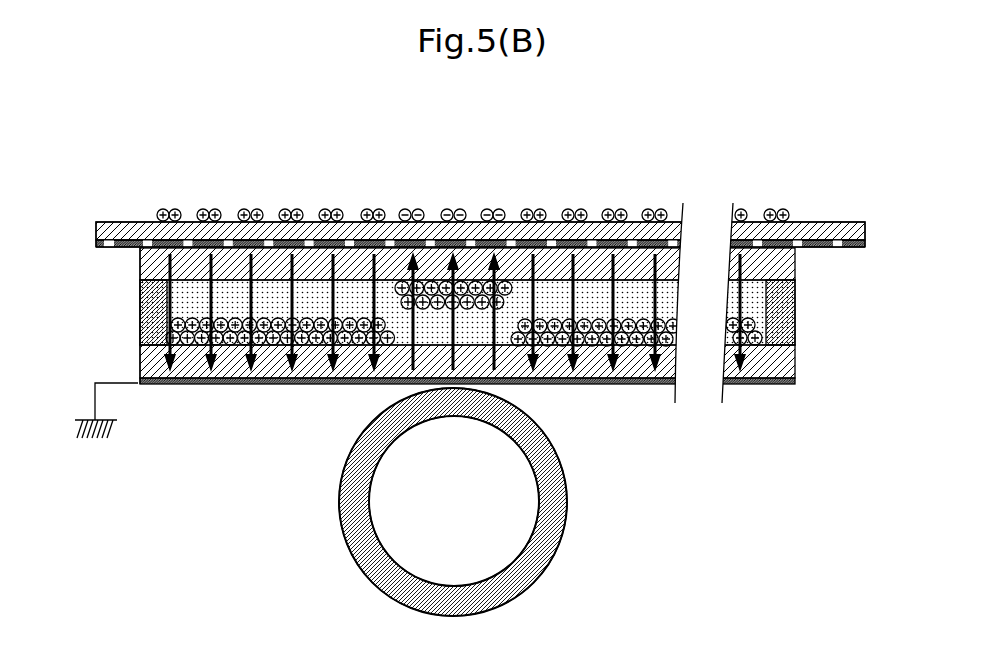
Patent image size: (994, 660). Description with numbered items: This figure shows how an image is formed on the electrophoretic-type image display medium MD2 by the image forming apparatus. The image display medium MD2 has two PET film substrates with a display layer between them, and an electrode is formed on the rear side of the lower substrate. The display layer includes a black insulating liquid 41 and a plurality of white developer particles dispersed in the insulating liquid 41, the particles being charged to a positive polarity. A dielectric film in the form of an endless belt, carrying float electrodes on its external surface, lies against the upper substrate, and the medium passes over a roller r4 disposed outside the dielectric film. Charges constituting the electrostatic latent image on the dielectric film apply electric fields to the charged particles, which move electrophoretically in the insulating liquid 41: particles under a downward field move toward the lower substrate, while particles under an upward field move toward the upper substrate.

The insulating liquid 41 is at (505, 340).
The image display medium MD2 is at (202, 405).
The roller r4 is at (555, 480).